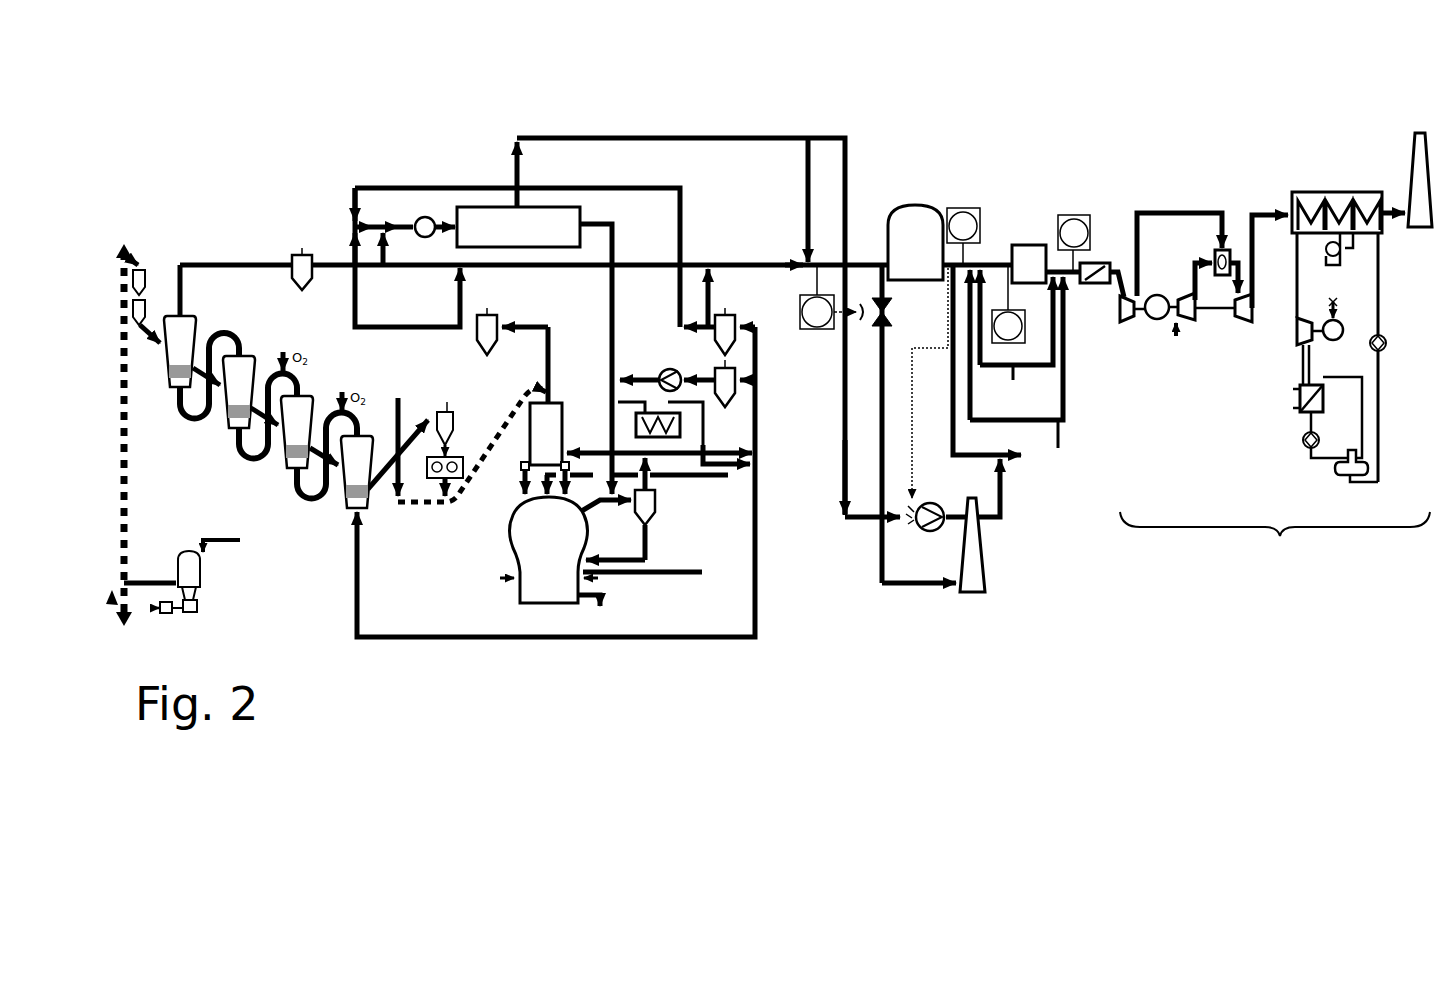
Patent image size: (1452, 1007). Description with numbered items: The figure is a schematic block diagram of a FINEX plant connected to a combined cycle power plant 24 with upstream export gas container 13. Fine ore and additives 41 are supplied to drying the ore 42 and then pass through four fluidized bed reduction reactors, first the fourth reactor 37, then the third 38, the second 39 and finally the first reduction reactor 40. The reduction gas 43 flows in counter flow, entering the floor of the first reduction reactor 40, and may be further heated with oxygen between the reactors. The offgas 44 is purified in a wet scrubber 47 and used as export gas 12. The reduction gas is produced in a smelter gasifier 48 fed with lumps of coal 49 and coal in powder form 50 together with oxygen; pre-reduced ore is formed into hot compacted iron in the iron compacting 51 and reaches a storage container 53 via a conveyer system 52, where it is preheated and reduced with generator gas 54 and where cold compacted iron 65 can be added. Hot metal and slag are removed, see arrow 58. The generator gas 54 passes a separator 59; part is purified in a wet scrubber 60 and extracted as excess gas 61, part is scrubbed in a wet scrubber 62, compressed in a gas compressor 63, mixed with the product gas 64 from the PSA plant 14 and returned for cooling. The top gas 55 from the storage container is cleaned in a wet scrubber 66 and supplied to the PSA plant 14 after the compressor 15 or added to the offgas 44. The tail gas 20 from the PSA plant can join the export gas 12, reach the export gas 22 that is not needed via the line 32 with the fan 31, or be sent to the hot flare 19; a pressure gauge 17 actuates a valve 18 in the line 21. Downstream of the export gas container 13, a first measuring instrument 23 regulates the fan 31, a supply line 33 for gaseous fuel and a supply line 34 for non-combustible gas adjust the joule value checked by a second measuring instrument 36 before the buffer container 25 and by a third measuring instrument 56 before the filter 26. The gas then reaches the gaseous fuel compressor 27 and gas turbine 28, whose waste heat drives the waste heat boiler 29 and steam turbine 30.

The export gas 12 is at (762, 260).
The export gas container 13 is at (915, 242).
The PSA plant 14 is at (518, 227).
The compressor 15 is at (418, 224).
The pressure gauge 17 is at (821, 330).
The valve 18 is at (892, 424).
The hot flare 19 is at (977, 590).
The tail gas 20 is at (631, 134).
The line 21 is at (927, 588).
The export gas that is not needed 22 is at (1027, 457).
The first measuring instrument for measuring joule value 23 is at (963, 205).
The combined cycle power plant 24 is at (1275, 544).
The buffer container 25 is at (1028, 243).
The filter 26 is at (1097, 262).
The gaseous fuel compressor 27 is at (1128, 323).
The gas turbine 28 is at (1180, 290).
The waste heat boiler 29 is at (1362, 307).
The steam turbine 30 is at (1318, 322).
The fan 31 is at (927, 533).
The line for tail gas 32 is at (868, 522).
The supply line for gaseous fuel 33 is at (1003, 342).
The supply line for non-combustible gas 34 is at (1060, 440).
The second measuring instrument for measuring joule value 36 is at (1027, 325).
The fourth reduction reactor 37 is at (180, 351).
The third reduction reactor 38 is at (239, 392).
The second reduction reactor 39 is at (297, 432).
The first reduction reactor 40 is at (357, 472).
The fine ore and additives 41 is at (230, 532).
The drying the ore 42 is at (202, 580).
The reduction gas 43 is at (352, 567).
The offgas 44 is at (178, 285).
The wet scrubber 47 is at (300, 248).
The smelter gasifier 48 is at (550, 550).
The lumps of coal 49 is at (714, 480).
The coal in powder form 50 is at (645, 582).
The iron compacting 51 is at (417, 436).
The conveyer system 52 is at (480, 468).
The storage container 53 is at (559, 423).
The generator gas 54 is at (737, 451).
The top gas 55 is at (397, 323).
The third measuring instrument for measuring joule value 56 is at (1074, 212).
The arrow 58 is at (604, 618).
The separator 59 is at (650, 502).
The wet scrubber 60 is at (740, 318).
The excess gas 61 is at (711, 259).
The wet scrubber 62 is at (734, 392).
The gas compressor 63 is at (669, 369).
The product gas 64 is at (614, 250).
The cold compacted iron 65 is at (397, 431).
The wet scrubber 66 is at (508, 318).